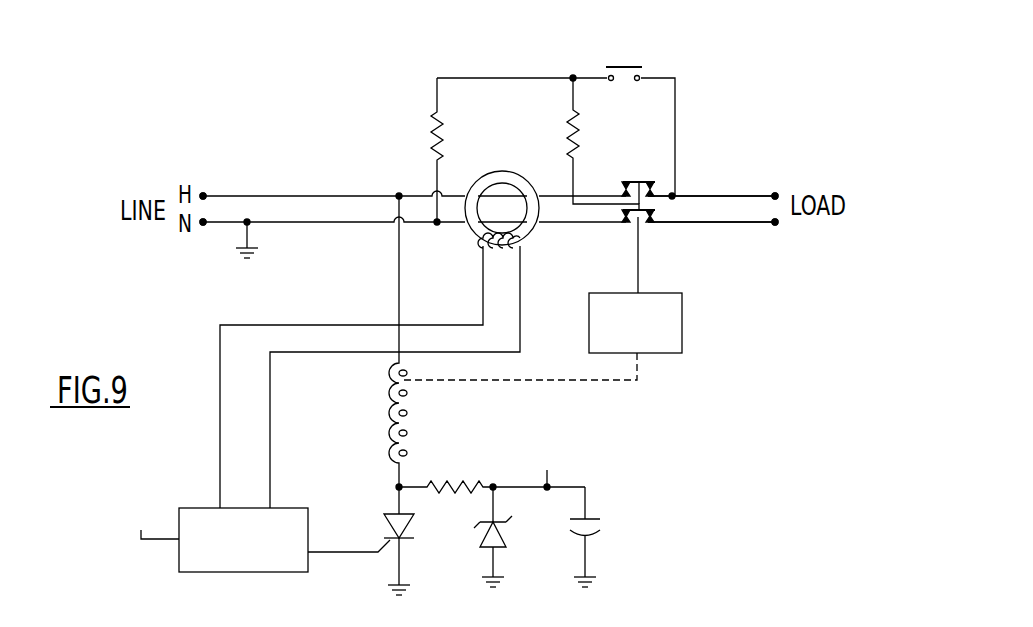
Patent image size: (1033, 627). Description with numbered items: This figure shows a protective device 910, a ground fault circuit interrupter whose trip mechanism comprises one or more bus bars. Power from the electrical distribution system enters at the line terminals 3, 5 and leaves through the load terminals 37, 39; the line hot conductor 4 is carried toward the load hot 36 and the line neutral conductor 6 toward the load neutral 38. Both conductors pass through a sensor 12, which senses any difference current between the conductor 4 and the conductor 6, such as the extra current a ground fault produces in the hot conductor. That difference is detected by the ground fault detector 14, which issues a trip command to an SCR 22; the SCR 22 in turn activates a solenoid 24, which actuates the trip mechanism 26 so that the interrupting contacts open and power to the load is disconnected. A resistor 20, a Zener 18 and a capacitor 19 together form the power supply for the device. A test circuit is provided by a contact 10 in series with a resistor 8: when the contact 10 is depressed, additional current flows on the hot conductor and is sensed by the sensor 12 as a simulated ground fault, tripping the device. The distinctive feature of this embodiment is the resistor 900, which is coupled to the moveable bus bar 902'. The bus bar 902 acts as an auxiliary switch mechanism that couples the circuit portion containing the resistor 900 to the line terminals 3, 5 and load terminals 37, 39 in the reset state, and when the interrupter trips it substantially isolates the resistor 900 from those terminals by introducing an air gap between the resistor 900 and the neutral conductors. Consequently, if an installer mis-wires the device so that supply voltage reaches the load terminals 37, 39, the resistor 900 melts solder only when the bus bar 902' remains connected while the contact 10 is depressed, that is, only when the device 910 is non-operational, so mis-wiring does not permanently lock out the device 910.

The line terminal 3 is at (203, 191).
The conductor 4 is at (292, 194).
The line terminal 5 is at (203, 226).
The conductor 6 is at (290, 224).
The resistor 8 is at (437, 140).
The contact 10 is at (622, 66).
The sensor 12 is at (470, 235).
The ground fault detector 14 is at (179, 565).
The Zener 18 is at (504, 549).
The capacitor 19 is at (600, 510).
The resistor 20 is at (441, 478).
The SCR 22 is at (384, 522).
The solenoid 24 is at (386, 418).
The trip mechanism 26 is at (683, 321).
The load hot 36 is at (700, 194).
The load terminal 37 is at (775, 193).
The load neutral 38 is at (700, 225).
The load terminal 39 is at (775, 225).
The resistor 900 is at (570, 135).
The bus bar 902 is at (627, 162).
The moveable bus bar 902' is at (597, 251).
The protective device 910 is at (667, 384).